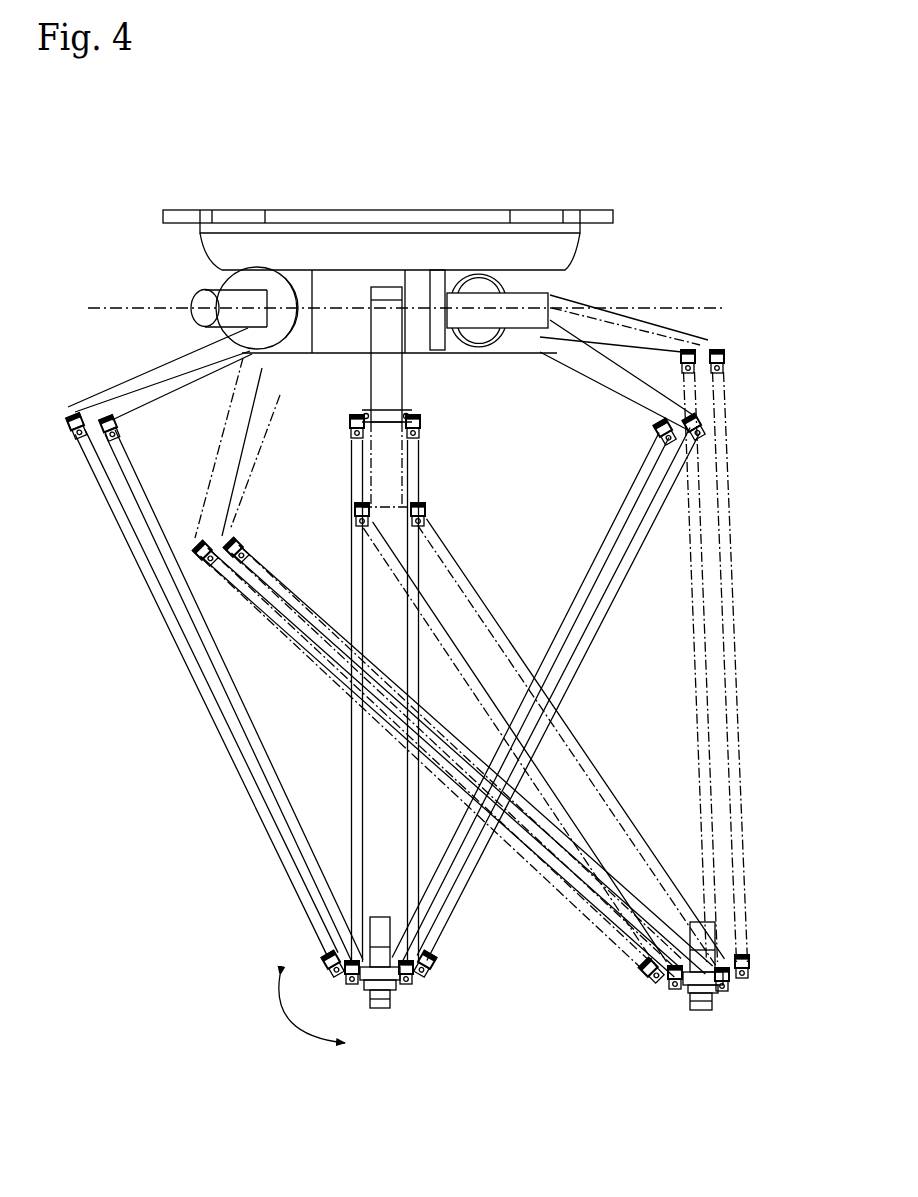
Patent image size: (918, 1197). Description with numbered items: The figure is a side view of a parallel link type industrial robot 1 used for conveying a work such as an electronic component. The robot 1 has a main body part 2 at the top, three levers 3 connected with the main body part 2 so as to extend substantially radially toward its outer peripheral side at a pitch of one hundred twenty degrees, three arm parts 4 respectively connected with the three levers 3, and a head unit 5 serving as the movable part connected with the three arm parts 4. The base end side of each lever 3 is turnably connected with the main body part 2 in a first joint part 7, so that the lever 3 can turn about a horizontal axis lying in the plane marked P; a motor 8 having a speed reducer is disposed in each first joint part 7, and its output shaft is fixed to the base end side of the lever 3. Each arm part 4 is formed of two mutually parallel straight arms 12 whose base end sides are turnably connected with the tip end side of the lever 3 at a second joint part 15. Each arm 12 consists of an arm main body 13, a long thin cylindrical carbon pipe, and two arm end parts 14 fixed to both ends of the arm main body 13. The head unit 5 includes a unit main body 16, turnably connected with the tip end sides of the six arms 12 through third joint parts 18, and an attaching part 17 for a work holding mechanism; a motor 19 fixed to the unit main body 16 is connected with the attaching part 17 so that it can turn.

The industrial robot 1 is at (722, 128).
The main body part 2 is at (330, 210).
The lever 3 is at (148, 372).
The arm part 4 is at (128, 655).
The head unit 5 is at (398, 985).
The first joint part 7 is at (362, 345).
The motor 8 is at (205, 290).
The arm 12 is at (225, 678).
The arm main body 13 is at (128, 525).
The arm end part 14 is at (120, 434).
The second joint part 15 is at (74, 405).
The unit main body 16 is at (541, 986).
The attaching part 17 is at (380, 1010).
The third joint part 18 is at (332, 988).
The motor 19 is at (380, 917).